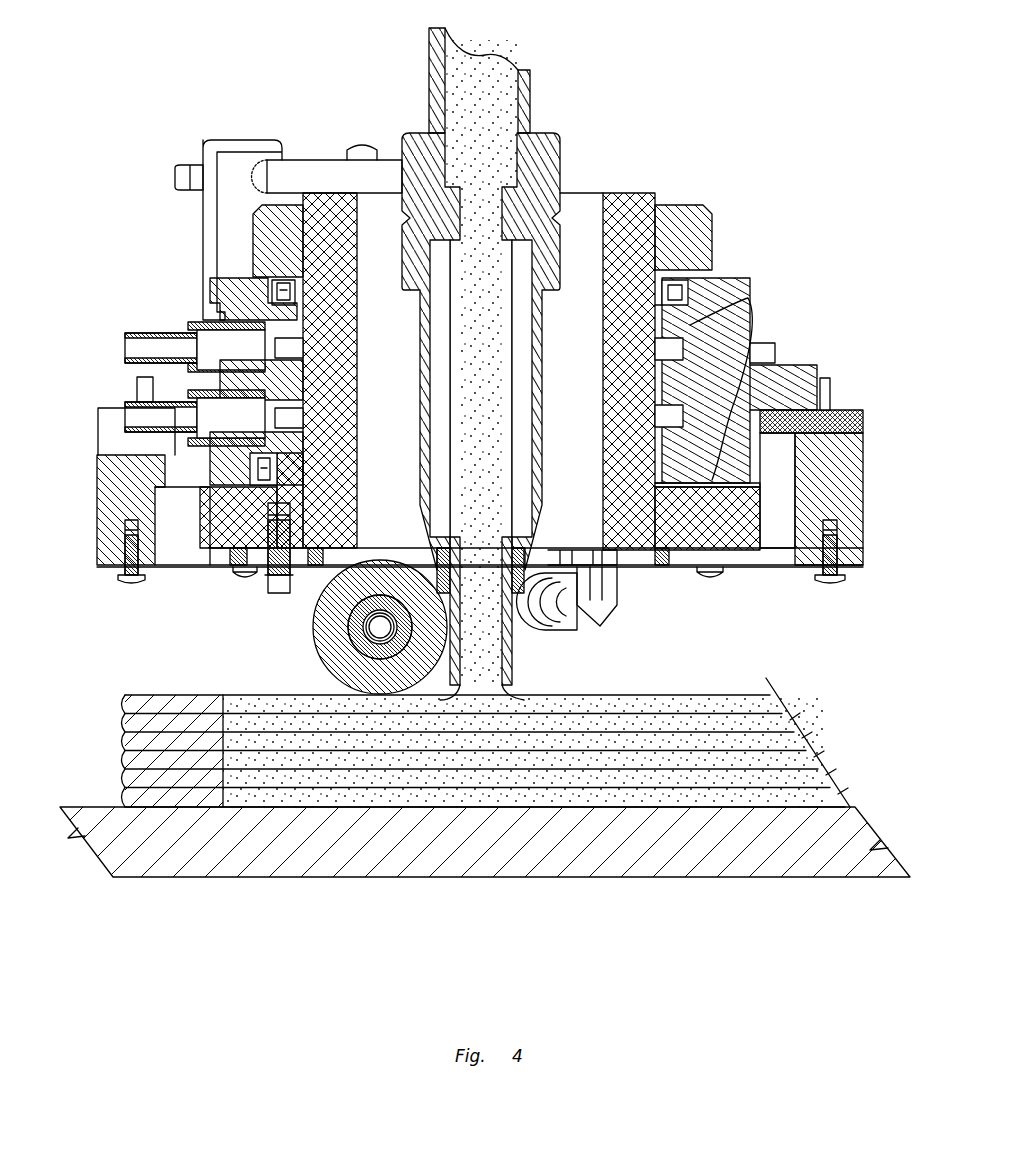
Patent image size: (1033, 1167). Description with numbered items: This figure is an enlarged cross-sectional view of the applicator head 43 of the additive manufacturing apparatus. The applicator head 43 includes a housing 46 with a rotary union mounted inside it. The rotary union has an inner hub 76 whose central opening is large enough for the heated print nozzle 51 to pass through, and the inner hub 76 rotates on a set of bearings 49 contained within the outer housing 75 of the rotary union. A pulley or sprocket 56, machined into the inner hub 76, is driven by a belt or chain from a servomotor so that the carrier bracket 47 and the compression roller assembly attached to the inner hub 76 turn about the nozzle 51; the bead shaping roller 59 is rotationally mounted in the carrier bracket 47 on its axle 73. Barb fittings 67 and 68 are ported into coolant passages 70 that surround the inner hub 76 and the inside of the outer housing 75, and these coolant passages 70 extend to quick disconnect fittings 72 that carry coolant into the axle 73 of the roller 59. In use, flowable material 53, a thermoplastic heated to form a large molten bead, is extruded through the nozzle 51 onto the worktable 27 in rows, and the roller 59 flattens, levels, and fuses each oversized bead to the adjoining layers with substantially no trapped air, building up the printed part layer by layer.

The worktable 27 is at (625, 880).
The applicator head 43 is at (796, 229).
The housing 46 is at (865, 478).
The carrier bracket 47 is at (265, 585).
The bearings 49 is at (740, 470).
The nozzle 51 is at (412, 133).
The flowable material 53 is at (486, 55).
The pulley or sprocket 56 is at (762, 520).
The bead shaping roller 59 is at (325, 650).
The barb fitting 67 is at (128, 420).
The barb fitting 68 is at (127, 350).
The coolant passages 70 is at (705, 352).
The quick disconnect fittings 72 is at (600, 626).
The axle 73 is at (335, 620).
The outer housing 75 is at (243, 278).
The inner hub 76 is at (623, 193).